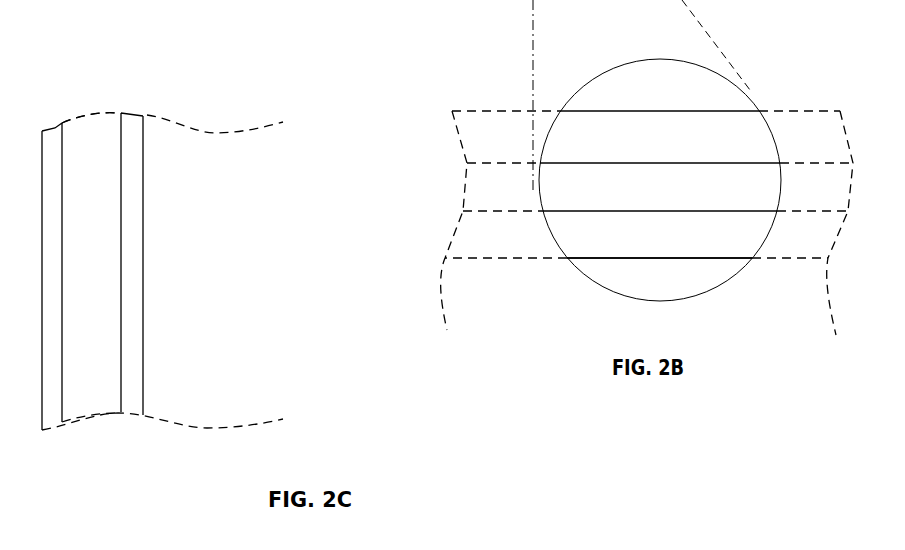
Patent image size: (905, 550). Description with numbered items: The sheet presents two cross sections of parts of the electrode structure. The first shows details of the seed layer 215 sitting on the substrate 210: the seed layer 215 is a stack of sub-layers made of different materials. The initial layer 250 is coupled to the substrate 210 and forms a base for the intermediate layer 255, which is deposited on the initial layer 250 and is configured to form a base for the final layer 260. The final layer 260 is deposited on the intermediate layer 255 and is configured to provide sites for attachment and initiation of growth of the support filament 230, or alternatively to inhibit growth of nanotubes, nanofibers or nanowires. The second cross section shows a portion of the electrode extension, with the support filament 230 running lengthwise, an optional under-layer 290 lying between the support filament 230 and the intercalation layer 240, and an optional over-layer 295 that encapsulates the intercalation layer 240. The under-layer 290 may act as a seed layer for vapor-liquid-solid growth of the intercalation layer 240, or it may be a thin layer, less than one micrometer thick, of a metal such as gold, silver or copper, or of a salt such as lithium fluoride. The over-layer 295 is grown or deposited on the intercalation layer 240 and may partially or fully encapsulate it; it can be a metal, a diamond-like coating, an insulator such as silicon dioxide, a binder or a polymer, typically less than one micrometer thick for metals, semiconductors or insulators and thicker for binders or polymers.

In FIG. 2B, the substrate 210 is at (733, 343).
In FIG. 2B, the seed layer 215 is at (420, 258).
In FIG. 2B, the initial layer 250 is at (637, 256).
In FIG. 2B, the intermediate layer 255 is at (632, 208).
In FIG. 2B, the final layer 260 is at (673, 158).
In FIG. 2C, the support filament 230 is at (218, 340).
In FIG. 2C, the intercalation layer 240 is at (90, 388).
In FIG. 2C, the under-layer 290 is at (135, 122).
In FIG. 2C, the over-layer 295 is at (55, 128).